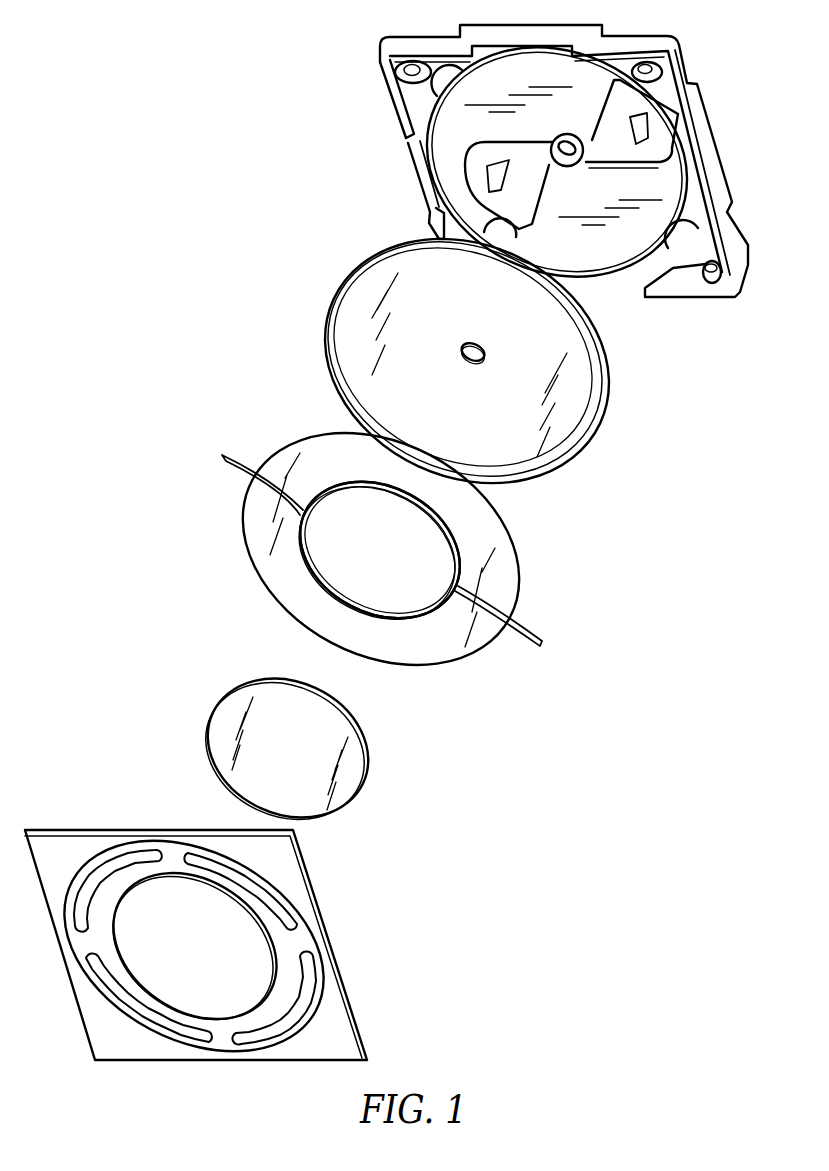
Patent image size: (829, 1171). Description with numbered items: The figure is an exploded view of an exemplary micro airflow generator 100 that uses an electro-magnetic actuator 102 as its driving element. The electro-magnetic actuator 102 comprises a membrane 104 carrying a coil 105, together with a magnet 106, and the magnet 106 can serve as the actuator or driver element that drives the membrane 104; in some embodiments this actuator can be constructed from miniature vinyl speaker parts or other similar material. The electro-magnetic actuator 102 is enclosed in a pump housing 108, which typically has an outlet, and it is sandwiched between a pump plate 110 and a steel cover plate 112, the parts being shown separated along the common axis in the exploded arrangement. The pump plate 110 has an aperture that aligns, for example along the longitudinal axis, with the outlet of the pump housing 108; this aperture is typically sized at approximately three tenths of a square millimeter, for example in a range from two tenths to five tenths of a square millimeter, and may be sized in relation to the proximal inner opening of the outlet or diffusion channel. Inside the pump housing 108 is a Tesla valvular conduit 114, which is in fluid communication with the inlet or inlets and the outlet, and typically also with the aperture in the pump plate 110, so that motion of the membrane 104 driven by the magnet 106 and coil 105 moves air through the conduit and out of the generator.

The micro airflow generator 100 is at (186, 16).
The electro-magnetic actuator 102 is at (193, 453).
The membrane 104 is at (500, 642).
The coil 105 is at (303, 563).
The magnet 106 is at (360, 797).
The pump housing 108 is at (718, 135).
The pump plate 110 is at (578, 468).
The cover plate 112 is at (314, 880).
The Tesla valvular conduit 114 is at (470, 158).